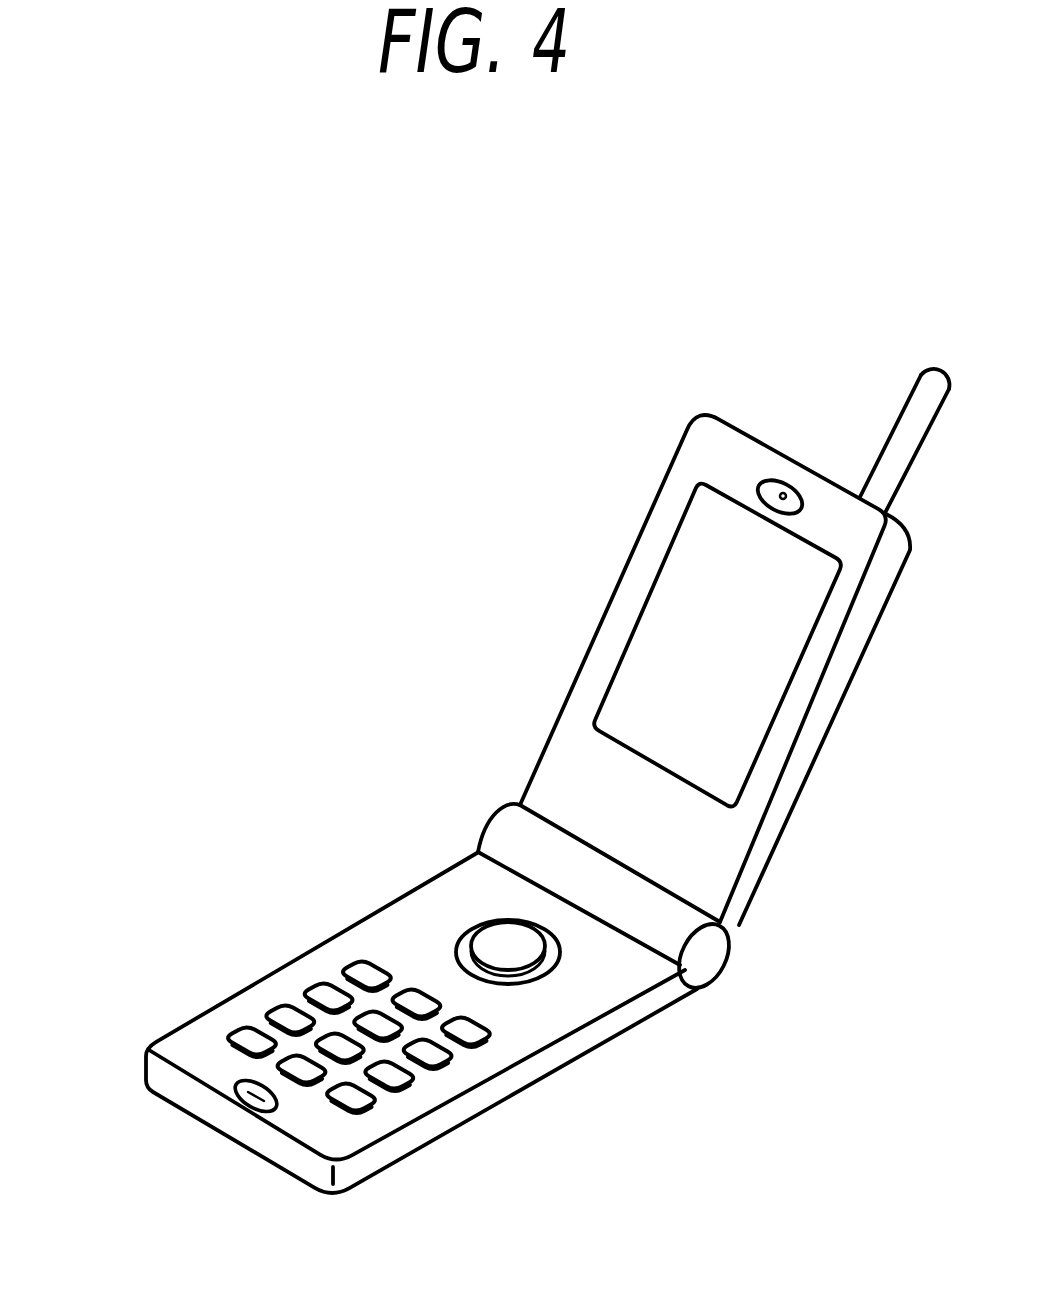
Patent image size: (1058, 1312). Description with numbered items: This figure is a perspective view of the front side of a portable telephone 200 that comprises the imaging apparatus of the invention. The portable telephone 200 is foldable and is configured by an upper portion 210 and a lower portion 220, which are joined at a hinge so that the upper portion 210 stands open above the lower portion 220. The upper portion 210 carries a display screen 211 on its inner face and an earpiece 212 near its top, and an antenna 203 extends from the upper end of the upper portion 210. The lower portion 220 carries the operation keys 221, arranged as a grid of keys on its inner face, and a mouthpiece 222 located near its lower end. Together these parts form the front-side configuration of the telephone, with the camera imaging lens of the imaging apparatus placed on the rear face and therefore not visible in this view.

The portable telephone 200 is at (390, 356).
The antenna 203 is at (905, 440).
The upper portion 210 is at (614, 378).
The display screen 211 is at (653, 620).
The earpiece 212 is at (762, 484).
The lower portion 220 is at (364, 795).
The operation keys 221 is at (310, 958).
The mouthpiece 222 is at (232, 1096).